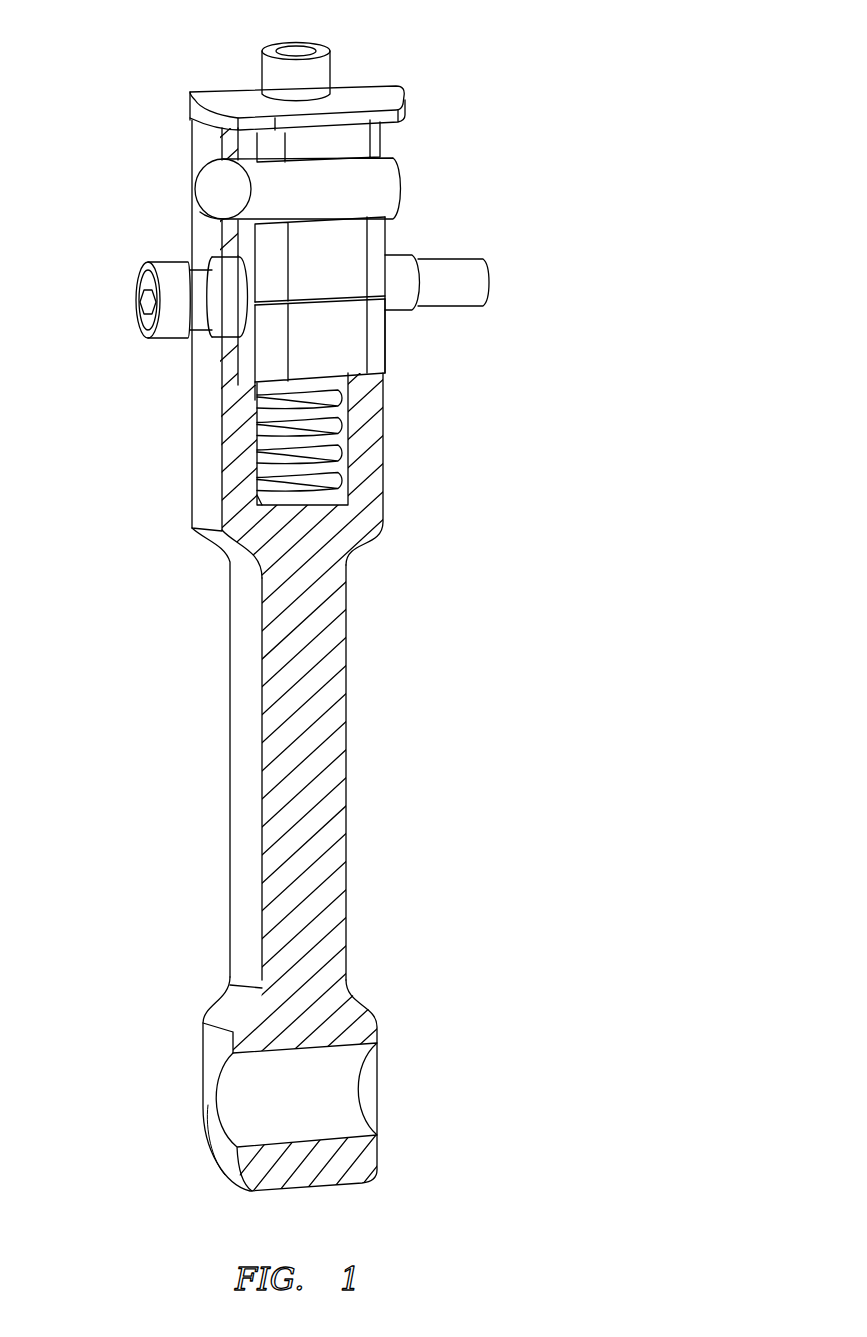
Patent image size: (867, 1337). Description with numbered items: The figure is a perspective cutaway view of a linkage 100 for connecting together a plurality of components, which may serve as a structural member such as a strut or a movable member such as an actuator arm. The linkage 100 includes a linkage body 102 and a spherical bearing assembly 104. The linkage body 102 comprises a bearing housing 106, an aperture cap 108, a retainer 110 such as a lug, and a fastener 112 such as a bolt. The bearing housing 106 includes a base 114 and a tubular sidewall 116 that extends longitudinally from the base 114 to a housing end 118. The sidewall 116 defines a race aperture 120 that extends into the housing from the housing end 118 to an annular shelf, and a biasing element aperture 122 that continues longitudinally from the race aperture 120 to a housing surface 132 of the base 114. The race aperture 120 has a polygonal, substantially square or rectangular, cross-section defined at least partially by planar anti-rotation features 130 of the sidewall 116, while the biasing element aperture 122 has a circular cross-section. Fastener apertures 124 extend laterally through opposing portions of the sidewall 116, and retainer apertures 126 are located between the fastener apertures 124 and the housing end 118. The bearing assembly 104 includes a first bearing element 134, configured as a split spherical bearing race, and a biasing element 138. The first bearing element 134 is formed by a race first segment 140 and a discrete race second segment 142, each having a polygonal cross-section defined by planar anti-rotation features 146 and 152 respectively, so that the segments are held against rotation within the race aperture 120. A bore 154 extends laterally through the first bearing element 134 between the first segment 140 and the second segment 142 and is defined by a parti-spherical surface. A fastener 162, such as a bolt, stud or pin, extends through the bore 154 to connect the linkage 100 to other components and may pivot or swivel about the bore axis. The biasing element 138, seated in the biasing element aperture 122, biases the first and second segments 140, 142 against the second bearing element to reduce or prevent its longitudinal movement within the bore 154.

The linkage 100 is at (433, 610).
The linkage body 102 is at (242, 777).
The spherical bearing assembly 104 is at (381, 298).
The bearing housing 106 is at (192, 498).
The aperture cap 108 is at (405, 104).
The retainer 110 is at (210, 183).
The fastener 112 is at (322, 68).
The base 114 is at (337, 604).
The sidewall 116 is at (363, 458).
The housing end 118 is at (190, 122).
The race aperture 120 is at (237, 363).
The biasing element aperture 122 is at (258, 486).
The fastener apertures 124 is at (207, 255).
The retainer apertures 126 is at (210, 222).
The anti-rotation features 130 is at (240, 380).
The housing surface 132 is at (349, 508).
The first bearing element 134 is at (383, 241).
The biasing element 138 is at (340, 484).
The race first segment 140 is at (355, 356).
The race second segment 142 is at (350, 235).
The anti-rotation features 146 is at (350, 323).
The anti-rotation features 152 is at (347, 276).
The bore 154 is at (237, 335).
The fastener 162 is at (147, 320).